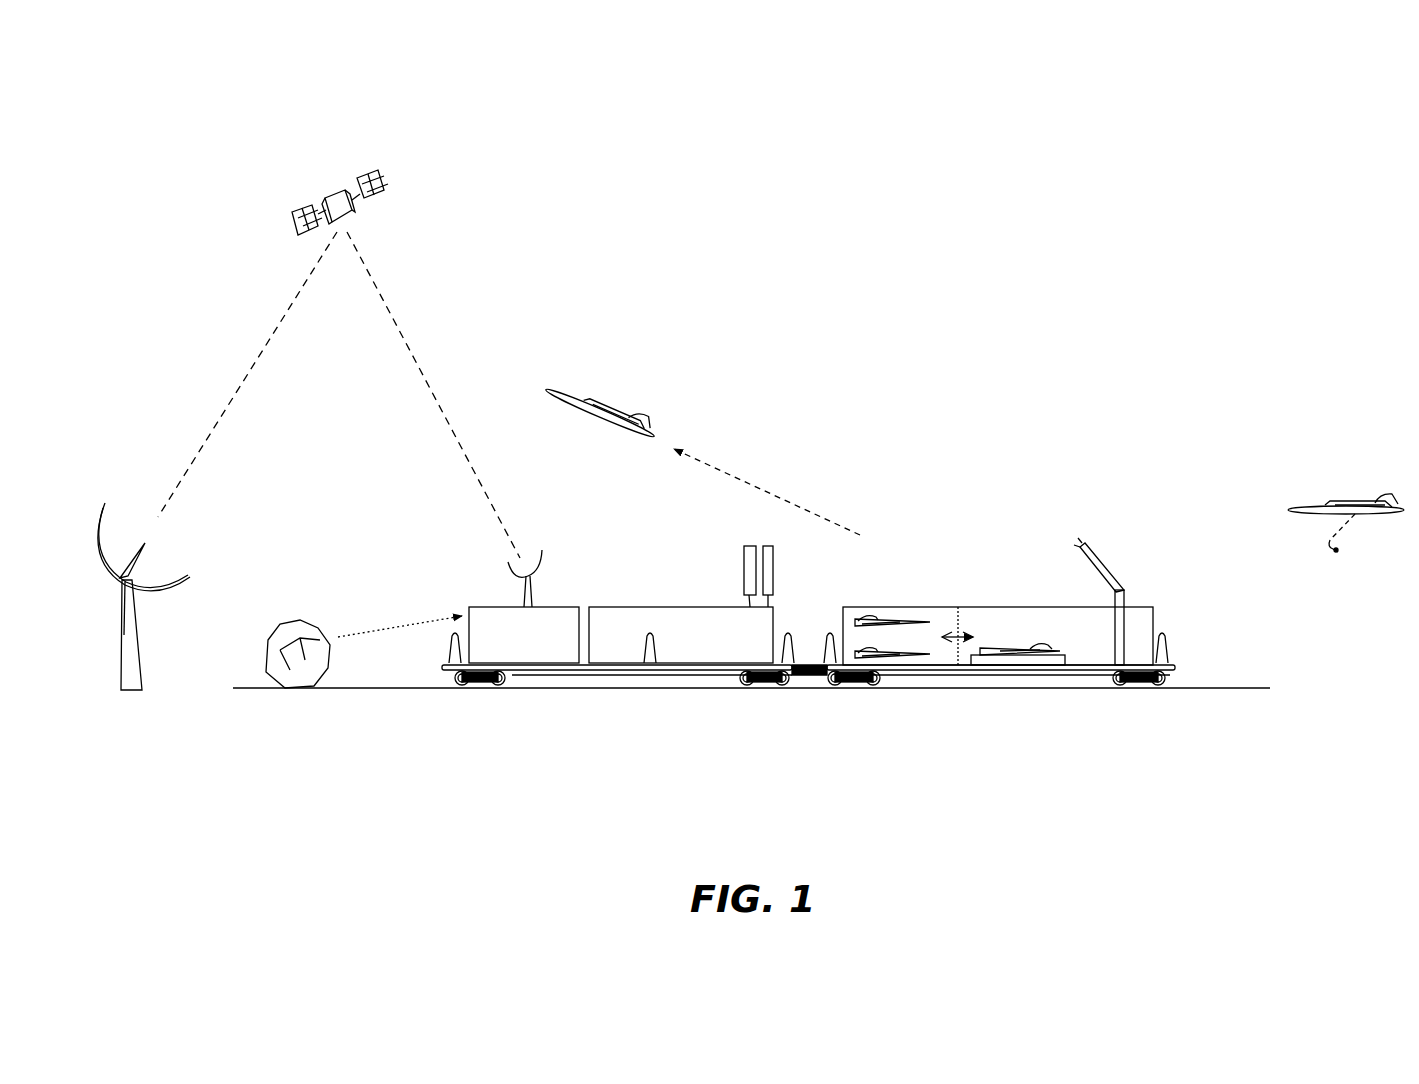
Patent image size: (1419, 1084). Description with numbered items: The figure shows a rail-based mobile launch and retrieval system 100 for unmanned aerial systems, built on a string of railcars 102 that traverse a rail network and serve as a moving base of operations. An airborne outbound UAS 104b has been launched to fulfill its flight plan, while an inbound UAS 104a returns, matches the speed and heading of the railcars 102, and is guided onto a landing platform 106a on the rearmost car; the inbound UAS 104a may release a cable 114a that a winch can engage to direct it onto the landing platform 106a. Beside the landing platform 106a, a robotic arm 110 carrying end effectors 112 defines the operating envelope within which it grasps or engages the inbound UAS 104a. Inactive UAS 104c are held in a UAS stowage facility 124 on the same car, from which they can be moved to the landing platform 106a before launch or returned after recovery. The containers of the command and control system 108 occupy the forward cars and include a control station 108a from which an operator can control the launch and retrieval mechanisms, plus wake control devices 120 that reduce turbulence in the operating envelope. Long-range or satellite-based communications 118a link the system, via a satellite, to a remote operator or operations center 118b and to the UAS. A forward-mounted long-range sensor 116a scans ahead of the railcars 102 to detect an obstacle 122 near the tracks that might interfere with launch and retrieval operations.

The mobile launch and retrieval system 100 is at (180, 141).
The railcar 102 is at (1098, 675).
The inbound UAS 104a is at (1305, 505).
The outbound UAS 104b is at (572, 395).
The inactive UAS 104c is at (867, 618).
The landing platform 106a is at (983, 660).
The command and control system 108 is at (772, 715).
The control station 108a is at (660, 648).
The robotic arm 110 is at (1122, 590).
The end effectors 112 is at (1086, 544).
The cable 114a is at (1360, 518).
The forward-mounted long-range sensor 116a is at (468, 606).
The long-range or satellite-based communications 118a is at (378, 176).
The remote operator or operations center 118b is at (130, 690).
The wake control devices 120 is at (750, 545).
The obstacle 122 is at (290, 617).
The UAS stowage facility 124 is at (943, 652).